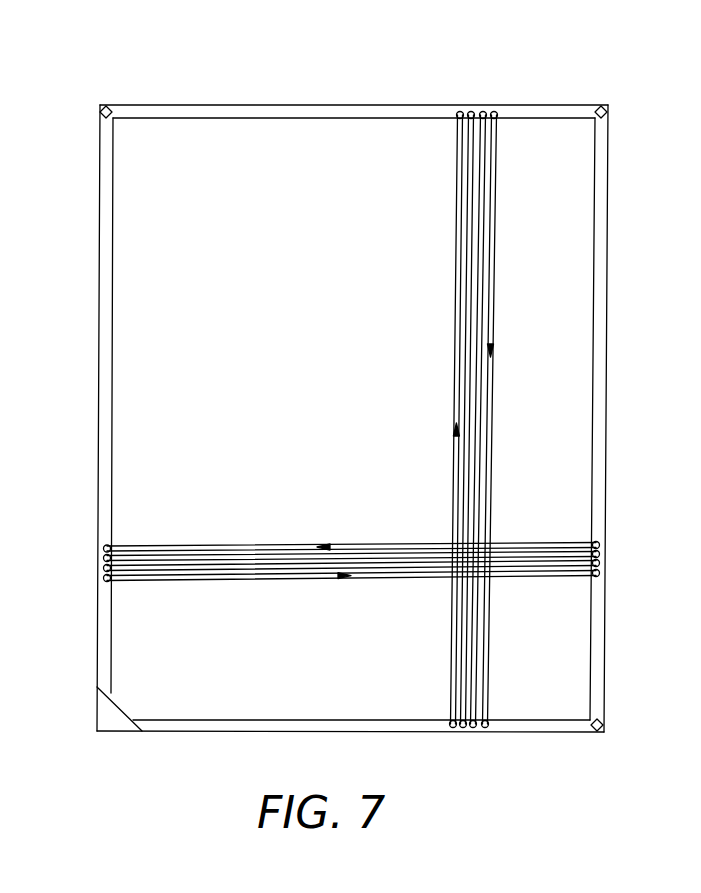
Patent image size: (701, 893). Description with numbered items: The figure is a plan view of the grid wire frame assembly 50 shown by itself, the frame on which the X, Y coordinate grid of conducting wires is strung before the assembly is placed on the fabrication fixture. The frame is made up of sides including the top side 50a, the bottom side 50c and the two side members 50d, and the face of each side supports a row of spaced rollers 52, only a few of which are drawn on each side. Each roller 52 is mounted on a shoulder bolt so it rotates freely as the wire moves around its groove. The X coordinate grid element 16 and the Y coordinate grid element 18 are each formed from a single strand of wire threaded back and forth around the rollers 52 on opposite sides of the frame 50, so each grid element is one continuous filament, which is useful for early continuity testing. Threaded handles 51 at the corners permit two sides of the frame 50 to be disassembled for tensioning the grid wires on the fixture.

The X coordinate grid element 16 is at (458, 238).
The Y coordinate grid element 18 is at (207, 546).
The grid wire frame assembly 50 is at (348, 413).
The frame side 50a is at (358, 107).
The frame side 50c is at (180, 722).
The frame side 50d is at (100, 322).
The threaded handle 51 is at (106, 108).
The roller 52 is at (493, 110).